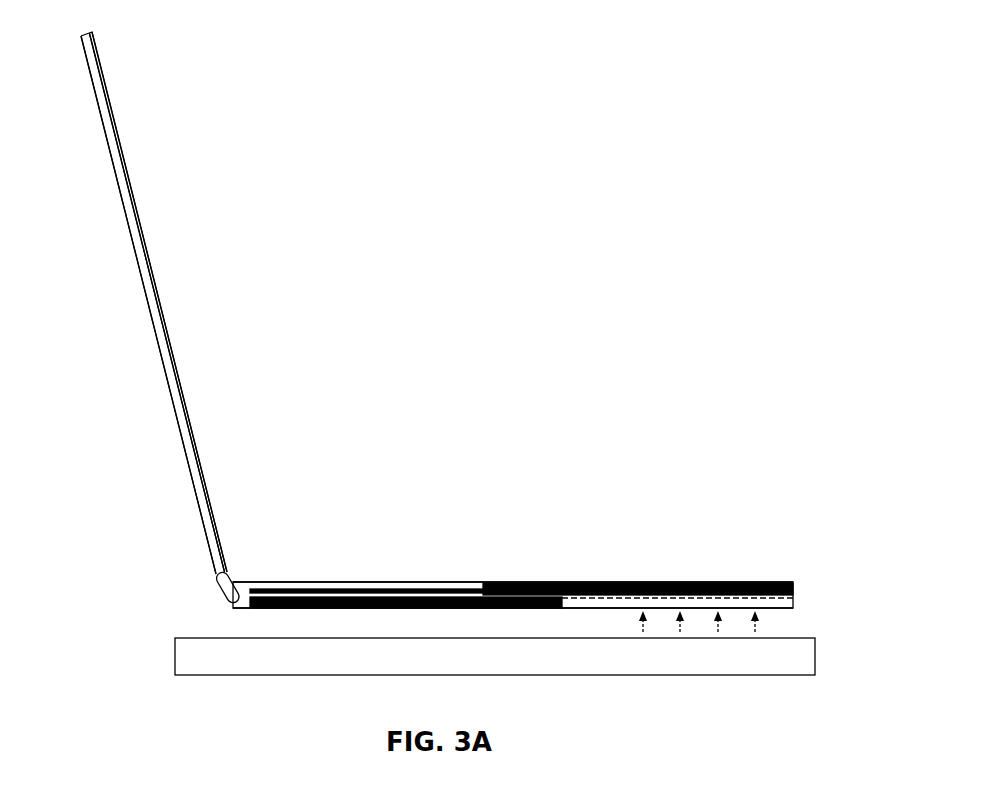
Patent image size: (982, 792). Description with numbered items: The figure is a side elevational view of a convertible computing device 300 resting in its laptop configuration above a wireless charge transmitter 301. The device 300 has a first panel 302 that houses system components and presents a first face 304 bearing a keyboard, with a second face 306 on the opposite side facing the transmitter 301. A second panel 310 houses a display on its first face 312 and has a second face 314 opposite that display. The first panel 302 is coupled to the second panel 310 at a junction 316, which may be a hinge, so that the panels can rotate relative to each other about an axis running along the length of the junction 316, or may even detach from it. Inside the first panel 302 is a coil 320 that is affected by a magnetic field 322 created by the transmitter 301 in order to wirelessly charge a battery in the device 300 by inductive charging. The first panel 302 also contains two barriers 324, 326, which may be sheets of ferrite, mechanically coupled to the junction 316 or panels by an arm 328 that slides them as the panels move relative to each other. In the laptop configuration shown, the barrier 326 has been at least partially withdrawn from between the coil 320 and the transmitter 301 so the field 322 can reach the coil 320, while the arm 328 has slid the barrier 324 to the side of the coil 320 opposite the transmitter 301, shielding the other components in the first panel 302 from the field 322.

The convertible computing device 300 is at (614, 182).
The wireless charge transmitter 301 is at (495, 656).
The first panel 302 is at (232, 600).
The first face 304 is at (292, 578).
The second face 306 is at (242, 614).
The second panel 310 is at (100, 142).
The first face 312 is at (138, 192).
The second face 314 is at (146, 316).
The junction 316 is at (222, 590).
The coil 320 is at (797, 597).
The magnetic field 322 is at (560, 622).
The barrier 324 is at (727, 580).
The barrier 326 is at (286, 609).
The arm 328 is at (352, 591).